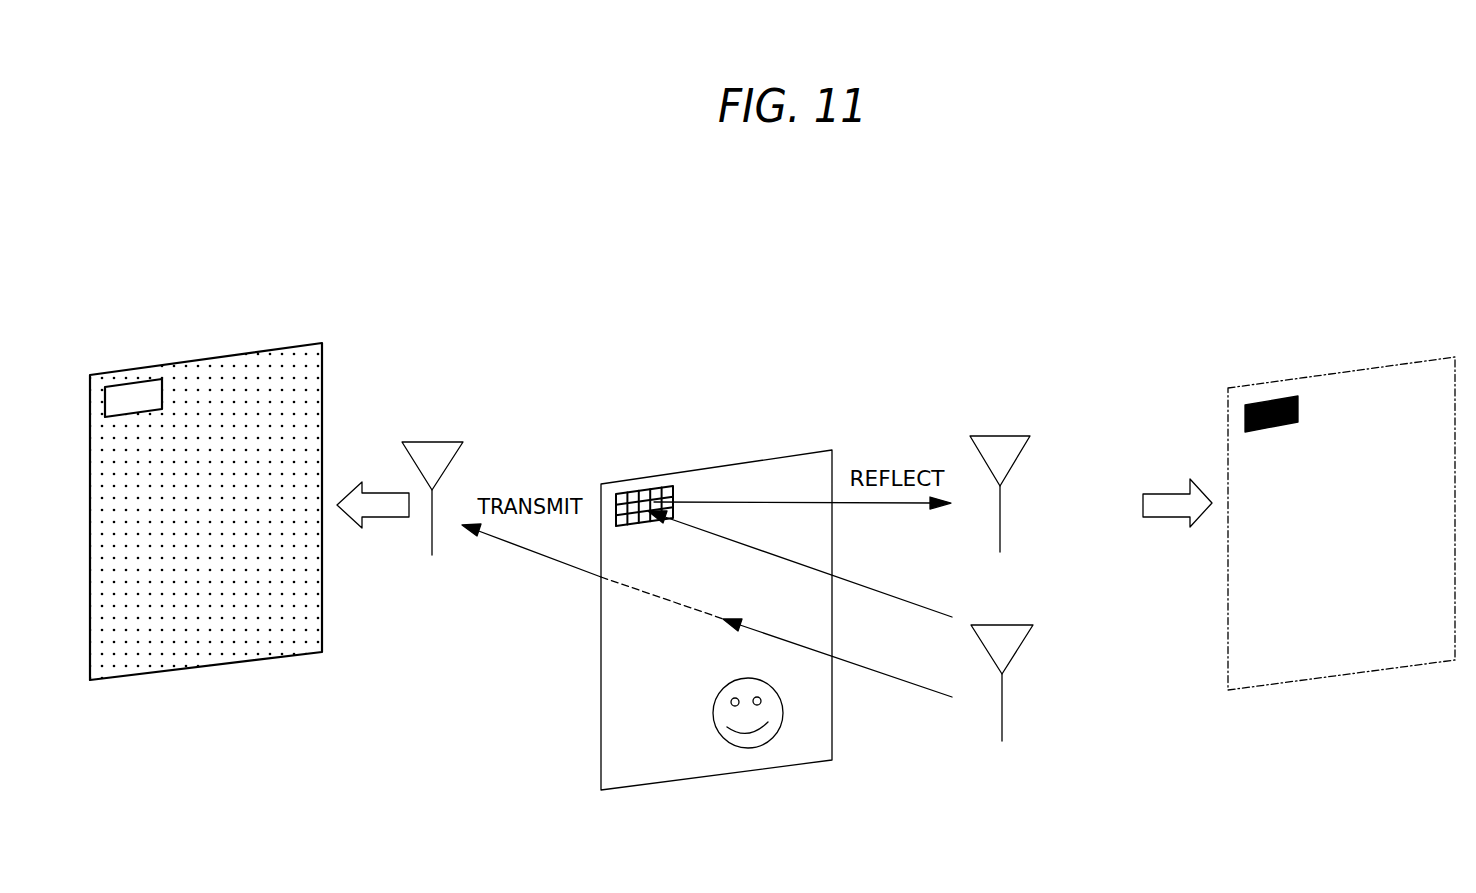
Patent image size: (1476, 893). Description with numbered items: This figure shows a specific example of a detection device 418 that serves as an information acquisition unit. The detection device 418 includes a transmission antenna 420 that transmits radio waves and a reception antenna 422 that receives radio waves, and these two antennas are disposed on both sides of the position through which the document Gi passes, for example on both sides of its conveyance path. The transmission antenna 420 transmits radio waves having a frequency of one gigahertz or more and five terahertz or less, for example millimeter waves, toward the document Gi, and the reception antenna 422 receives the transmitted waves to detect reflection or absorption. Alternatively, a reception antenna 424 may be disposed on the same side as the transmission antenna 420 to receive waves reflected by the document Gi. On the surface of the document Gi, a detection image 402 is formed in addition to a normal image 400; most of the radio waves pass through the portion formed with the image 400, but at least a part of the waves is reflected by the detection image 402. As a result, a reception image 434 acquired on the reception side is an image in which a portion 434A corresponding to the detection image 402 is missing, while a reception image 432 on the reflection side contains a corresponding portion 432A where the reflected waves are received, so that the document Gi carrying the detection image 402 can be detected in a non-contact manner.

The image 400 is at (779, 651).
The detection image 402 is at (626, 488).
The detection device 418 is at (455, 310).
The transmission antenna 420 is at (1020, 649).
The reception antenna 422 is at (433, 440).
The reception antenna 424 is at (1000, 434).
The received image 432 is at (245, 352).
The marker region in received image 432A is at (142, 395).
The reception image 434 is at (1373, 368).
The portion 434A is at (1270, 402).
The document Gi is at (761, 466).